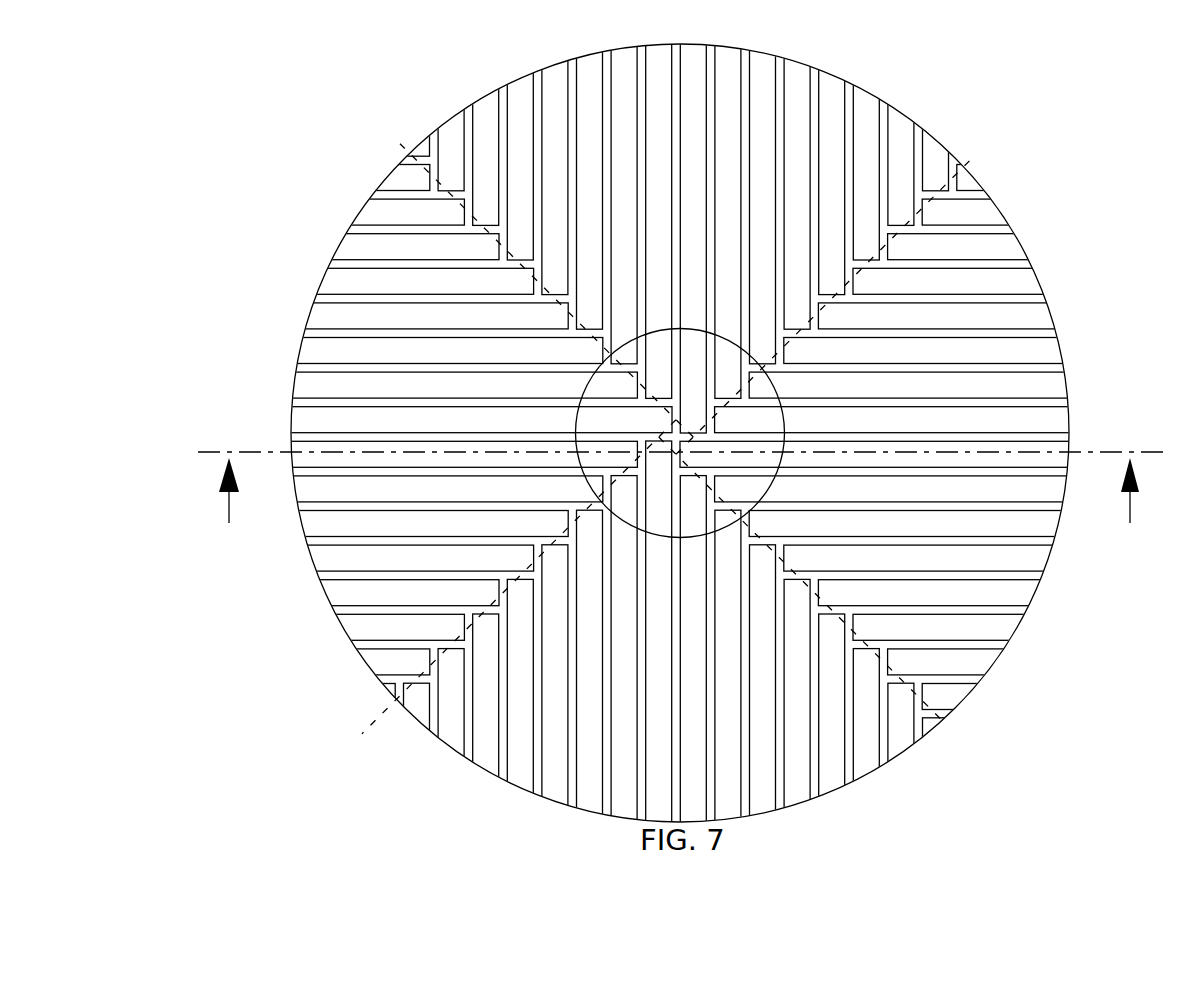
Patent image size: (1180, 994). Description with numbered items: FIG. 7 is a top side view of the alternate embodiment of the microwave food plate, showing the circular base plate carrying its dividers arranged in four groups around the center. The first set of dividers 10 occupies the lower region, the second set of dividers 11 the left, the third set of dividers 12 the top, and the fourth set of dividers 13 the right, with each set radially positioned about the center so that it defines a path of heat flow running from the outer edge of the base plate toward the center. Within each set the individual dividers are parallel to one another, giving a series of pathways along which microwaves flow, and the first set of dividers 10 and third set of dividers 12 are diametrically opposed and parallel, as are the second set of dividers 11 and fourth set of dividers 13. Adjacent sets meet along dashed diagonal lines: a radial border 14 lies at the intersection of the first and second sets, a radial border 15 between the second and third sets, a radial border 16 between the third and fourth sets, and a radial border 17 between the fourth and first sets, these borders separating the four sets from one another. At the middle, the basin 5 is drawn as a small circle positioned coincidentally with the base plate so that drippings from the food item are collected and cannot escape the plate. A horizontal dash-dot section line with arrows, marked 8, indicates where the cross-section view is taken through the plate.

The basin 5 is at (684, 328).
The section line 8- 8 is at (680, 487).
The first set of dividers 10 is at (467, 777).
The second set of dividers 11 is at (282, 355).
The third set of dividers 12 is at (897, 88).
The fourth set of dividers 13 is at (1073, 512).
The radial border 14 is at (380, 717).
The radial border 15 is at (401, 149).
The radial border 16 is at (985, 146).
The radial border 17 is at (950, 728).